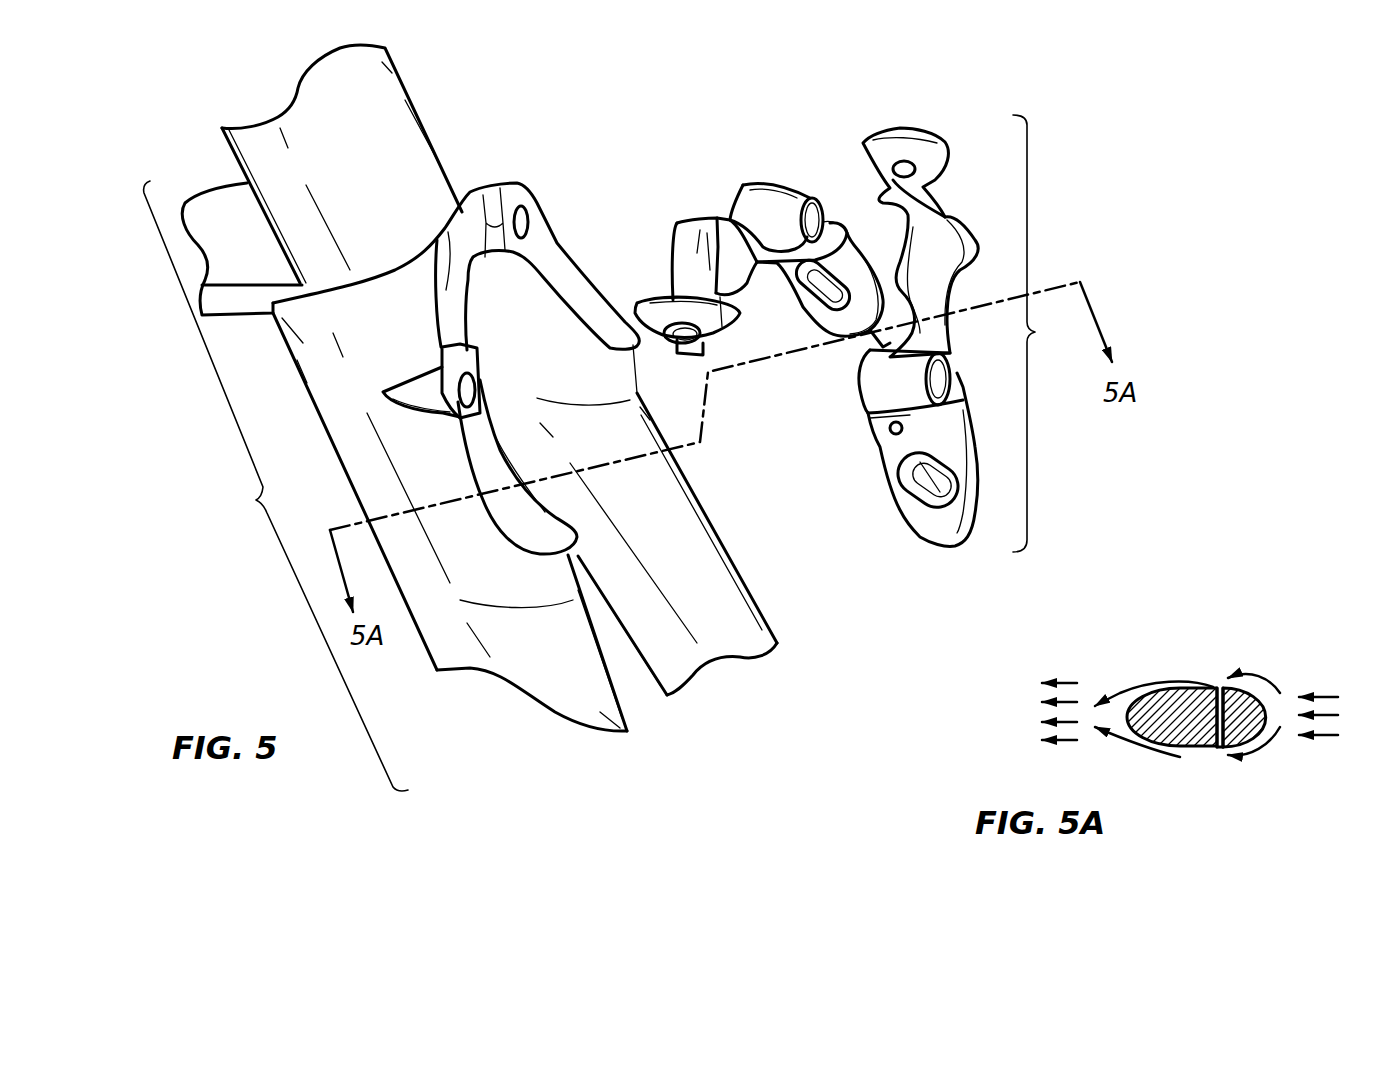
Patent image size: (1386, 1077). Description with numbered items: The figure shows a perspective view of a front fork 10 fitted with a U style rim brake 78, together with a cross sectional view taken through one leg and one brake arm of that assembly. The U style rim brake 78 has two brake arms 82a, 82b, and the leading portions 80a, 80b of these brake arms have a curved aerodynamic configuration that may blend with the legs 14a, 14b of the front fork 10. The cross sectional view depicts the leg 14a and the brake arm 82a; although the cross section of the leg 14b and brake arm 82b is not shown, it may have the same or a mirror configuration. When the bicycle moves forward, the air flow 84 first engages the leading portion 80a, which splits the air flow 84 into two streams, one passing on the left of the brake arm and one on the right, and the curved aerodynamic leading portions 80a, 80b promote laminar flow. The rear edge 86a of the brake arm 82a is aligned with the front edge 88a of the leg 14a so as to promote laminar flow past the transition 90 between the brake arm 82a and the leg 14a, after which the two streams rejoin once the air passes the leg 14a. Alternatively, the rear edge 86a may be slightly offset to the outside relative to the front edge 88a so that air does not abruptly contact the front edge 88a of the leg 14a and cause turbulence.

In FIG. 5, the front fork 10 is at (276, 486).
In FIG. 5, the leg 14a is at (535, 737).
In FIG. 5A, the leg 14a is at (1160, 717).
In FIG. 5, the leg 14b is at (717, 683).
In FIG. 5, the U style rim brake 78 is at (1043, 333).
In FIG. 5, the leading portion 80a is at (950, 327).
In FIG. 5A, the leading portion 80a is at (1250, 673).
In FIG. 5, the leading portion 80b is at (845, 230).
In FIG. 5, the brake arm 82a is at (940, 570).
In FIG. 5A, the brake arm 82a is at (1247, 710).
In FIG. 5, the brake arm 82b is at (773, 167).
In FIG. 5A, the air flow 84 is at (1328, 735).
In FIG. 5A, the rear edge 86a is at (1224, 750).
In FIG. 5A, the front edge 88a is at (1218, 748).
In FIG. 5A, the transition 90 is at (1221, 749).